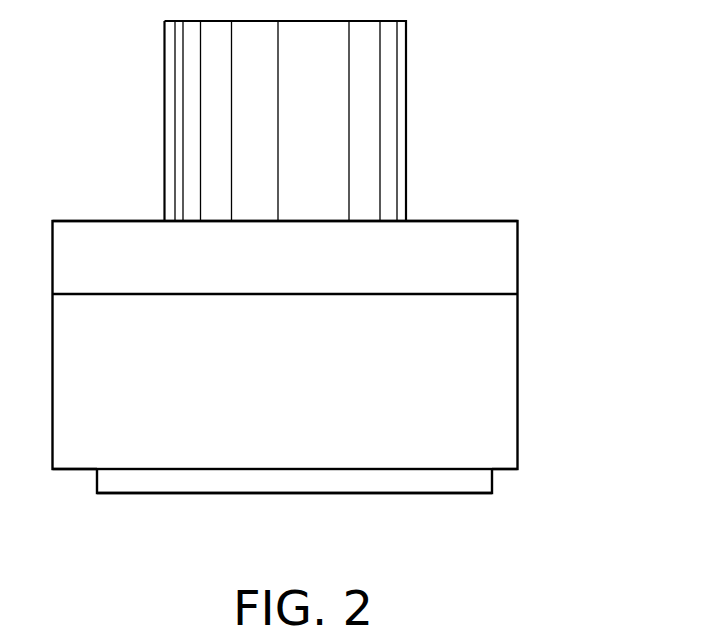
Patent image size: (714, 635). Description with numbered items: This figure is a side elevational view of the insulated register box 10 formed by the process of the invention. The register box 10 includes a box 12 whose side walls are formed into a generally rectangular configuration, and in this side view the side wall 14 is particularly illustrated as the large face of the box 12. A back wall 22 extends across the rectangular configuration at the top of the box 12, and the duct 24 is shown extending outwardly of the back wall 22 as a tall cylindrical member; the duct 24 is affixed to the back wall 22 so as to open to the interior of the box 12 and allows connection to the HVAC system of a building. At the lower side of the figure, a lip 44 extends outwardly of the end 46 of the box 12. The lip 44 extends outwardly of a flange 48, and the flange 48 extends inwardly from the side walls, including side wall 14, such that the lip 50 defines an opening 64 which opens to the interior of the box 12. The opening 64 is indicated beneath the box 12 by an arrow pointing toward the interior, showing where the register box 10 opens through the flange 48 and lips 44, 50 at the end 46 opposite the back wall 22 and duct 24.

The insulated register box 10 is at (481, 133).
The box 12 is at (518, 410).
The side wall 14 is at (506, 363).
The back wall 22 is at (455, 221).
The duct 24 is at (391, 94).
The lip 44 is at (455, 494).
The end of the box 46 is at (510, 471).
The flange 48 is at (80, 471).
The lip 50 is at (282, 494).
The opening 64 is at (372, 505).